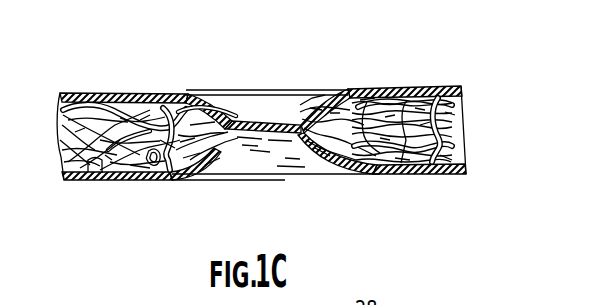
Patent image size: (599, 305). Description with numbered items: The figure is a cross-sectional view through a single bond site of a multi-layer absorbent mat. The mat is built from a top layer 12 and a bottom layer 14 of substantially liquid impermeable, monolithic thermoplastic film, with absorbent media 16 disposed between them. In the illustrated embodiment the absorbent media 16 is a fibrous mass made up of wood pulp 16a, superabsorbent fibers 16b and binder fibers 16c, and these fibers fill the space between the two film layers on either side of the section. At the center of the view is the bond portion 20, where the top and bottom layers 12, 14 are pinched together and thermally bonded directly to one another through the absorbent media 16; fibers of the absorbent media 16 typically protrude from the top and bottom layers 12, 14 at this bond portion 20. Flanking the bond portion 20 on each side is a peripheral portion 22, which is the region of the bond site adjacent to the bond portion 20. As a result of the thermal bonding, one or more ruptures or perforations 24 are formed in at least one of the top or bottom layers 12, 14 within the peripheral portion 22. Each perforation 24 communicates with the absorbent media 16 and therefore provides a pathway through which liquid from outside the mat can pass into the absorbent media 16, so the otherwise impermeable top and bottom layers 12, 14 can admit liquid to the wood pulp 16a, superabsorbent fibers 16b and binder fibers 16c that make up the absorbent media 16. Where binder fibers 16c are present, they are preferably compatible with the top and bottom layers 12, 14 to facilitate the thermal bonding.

The top layer 12 is at (133, 97).
The bottom layer 14 is at (127, 150).
The absorbent media 16 is at (470, 127).
The wood pulp 16a is at (153, 150).
The superabsorbent fibers 16b is at (103, 155).
The binder fibers 16c is at (85, 97).
The bond portion 20 is at (292, 102).
The peripheral portion 22 is at (231, 97).
The perforation 24 is at (314, 112).